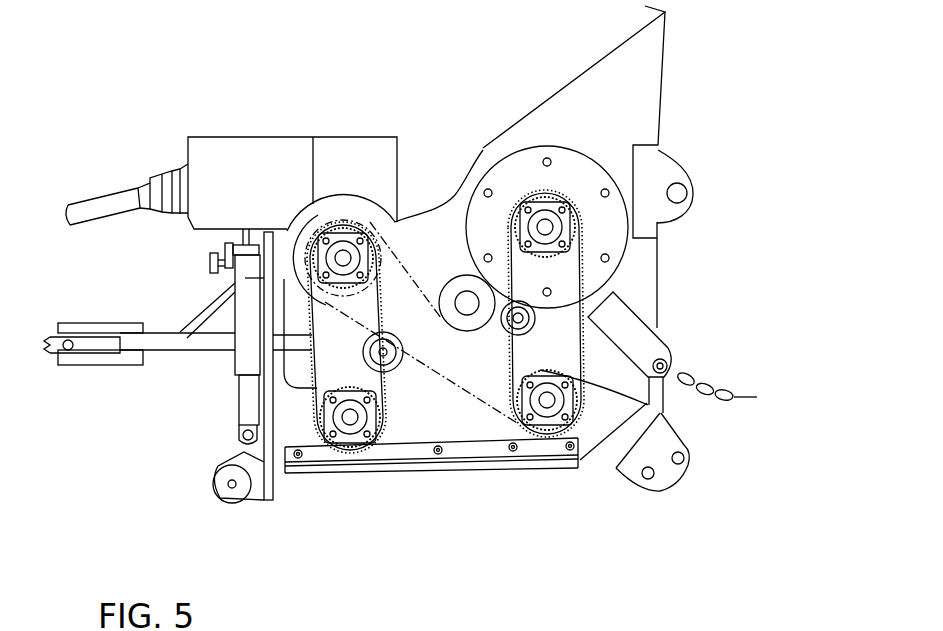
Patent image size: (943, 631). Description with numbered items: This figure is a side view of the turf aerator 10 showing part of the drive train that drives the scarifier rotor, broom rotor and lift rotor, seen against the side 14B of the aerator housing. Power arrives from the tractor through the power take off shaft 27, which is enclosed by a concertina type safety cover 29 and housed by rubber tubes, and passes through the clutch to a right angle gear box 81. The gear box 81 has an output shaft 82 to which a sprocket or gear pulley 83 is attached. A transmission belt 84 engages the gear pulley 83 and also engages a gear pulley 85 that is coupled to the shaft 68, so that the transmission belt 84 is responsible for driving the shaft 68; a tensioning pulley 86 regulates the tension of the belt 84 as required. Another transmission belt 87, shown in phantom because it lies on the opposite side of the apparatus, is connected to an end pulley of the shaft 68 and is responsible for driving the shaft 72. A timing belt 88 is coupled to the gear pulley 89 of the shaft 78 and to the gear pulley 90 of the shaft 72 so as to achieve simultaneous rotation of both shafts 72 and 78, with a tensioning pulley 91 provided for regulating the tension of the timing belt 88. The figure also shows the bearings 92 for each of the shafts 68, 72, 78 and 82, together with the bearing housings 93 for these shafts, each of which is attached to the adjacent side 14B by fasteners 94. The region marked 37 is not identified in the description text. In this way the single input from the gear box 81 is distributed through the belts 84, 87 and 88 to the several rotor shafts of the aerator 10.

The turf aerator 10 is at (423, 109).
The side of housing 14B is at (635, 110).
The power take off shaft 27 is at (107, 205).
The safety cover 29 is at (163, 183).
The motor 37 is at (296, 173).
The right angle gear box 81 is at (370, 173).
The output shaft 82 is at (408, 220).
The gear pulley 83 is at (345, 258).
The transmission belt 84 is at (378, 312).
The gear pulley 85 is at (383, 422).
The tensioning pulley 86 is at (404, 353).
The transmission belt 87 is at (475, 388).
The timing belt 88 is at (575, 268).
The gear pulley 89 is at (567, 148).
The gear pulley 90 is at (573, 386).
The tensioning pulley 91 is at (476, 320).
The bearings 92 is at (543, 200).
The bearing housings 93 is at (343, 228).
The fasteners 94 is at (304, 228).
The shaft 78 is at (572, 228).
The shaft 72 is at (648, 402).
The shaft 68 is at (348, 474).